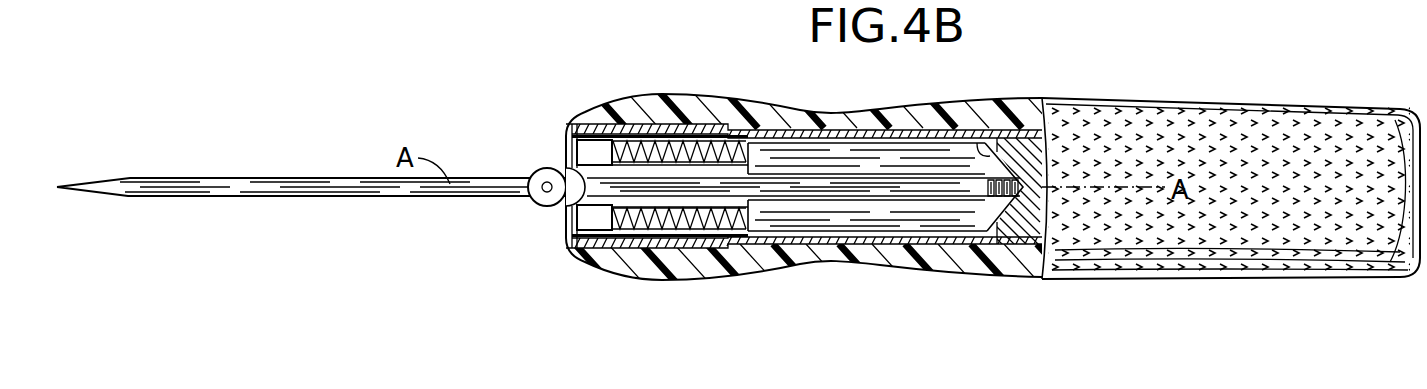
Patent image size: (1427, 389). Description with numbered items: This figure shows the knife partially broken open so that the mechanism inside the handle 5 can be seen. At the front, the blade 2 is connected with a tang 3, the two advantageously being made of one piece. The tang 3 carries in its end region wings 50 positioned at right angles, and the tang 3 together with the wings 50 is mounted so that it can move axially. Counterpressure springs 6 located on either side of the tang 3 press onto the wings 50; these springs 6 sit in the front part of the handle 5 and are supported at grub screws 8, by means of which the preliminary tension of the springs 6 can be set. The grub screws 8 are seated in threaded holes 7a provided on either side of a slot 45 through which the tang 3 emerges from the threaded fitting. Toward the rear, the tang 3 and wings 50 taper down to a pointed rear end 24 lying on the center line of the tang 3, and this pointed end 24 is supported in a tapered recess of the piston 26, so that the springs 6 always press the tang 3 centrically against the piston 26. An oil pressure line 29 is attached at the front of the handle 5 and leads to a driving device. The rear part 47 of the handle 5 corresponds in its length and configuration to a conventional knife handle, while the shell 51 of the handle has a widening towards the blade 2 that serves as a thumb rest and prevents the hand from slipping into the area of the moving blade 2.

The blade 2 is at (252, 190).
The tang 3 is at (800, 190).
The handle 5 is at (1010, 118).
The counterpressure springs 6 is at (717, 143).
The threaded holes 7a is at (600, 128).
The grub screws 8 is at (578, 148).
The rear end 24 is at (987, 157).
The piston 26 is at (1020, 214).
The oil pressure line 29 is at (538, 178).
The slot 45 is at (651, 143).
The rear part 47 is at (1410, 107).
The wings 50 is at (840, 152).
The shell 51 is at (1095, 97).